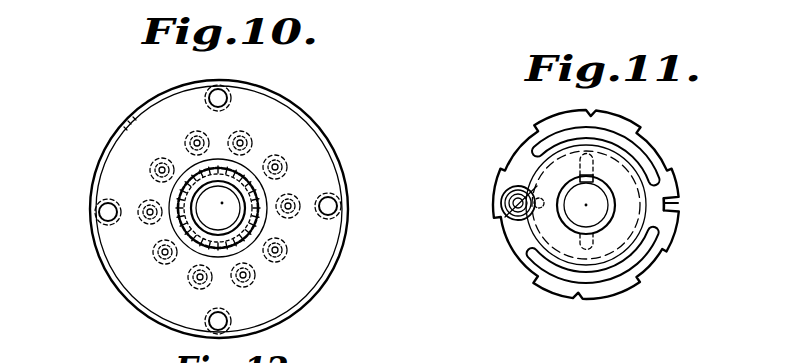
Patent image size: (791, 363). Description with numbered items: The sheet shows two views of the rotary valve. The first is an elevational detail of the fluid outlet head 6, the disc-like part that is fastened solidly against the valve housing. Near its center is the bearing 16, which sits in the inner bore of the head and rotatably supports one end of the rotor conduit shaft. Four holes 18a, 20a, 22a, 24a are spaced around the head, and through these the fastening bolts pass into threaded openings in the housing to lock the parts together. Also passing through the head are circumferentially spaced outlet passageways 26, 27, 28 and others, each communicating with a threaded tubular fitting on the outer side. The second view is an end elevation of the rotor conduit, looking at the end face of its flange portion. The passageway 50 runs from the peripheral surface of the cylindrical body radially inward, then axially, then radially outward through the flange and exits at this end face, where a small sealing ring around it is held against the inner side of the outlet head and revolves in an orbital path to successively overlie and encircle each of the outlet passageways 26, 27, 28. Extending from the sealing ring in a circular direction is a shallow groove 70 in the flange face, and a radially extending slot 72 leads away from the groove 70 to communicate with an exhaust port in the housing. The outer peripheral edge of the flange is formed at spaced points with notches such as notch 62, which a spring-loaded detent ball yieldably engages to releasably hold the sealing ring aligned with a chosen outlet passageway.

In FIG. 10, the fluid outlet head 6 is at (324, 247).
In FIG. 10, the bearing 16 is at (185, 232).
In FIG. 10, the hole 18a is at (221, 96).
In FIG. 10, the hole 20a is at (330, 205).
In FIG. 10, the hole 22a is at (218, 323).
In FIG. 10, the hole 24a is at (108, 212).
In FIG. 10, the outlet passageway 26 is at (243, 141).
In FIG. 10, the outlet passageway 27 is at (291, 204).
In FIG. 10, the outlet passageway 28 is at (246, 277).
In FIG. 11, the passageway 50 is at (505, 217).
In FIG. 11, the notch 62 is at (503, 197).
In FIG. 11, the shallow groove 70 is at (645, 174).
In FIG. 11, the radially extending slot 72 is at (666, 203).